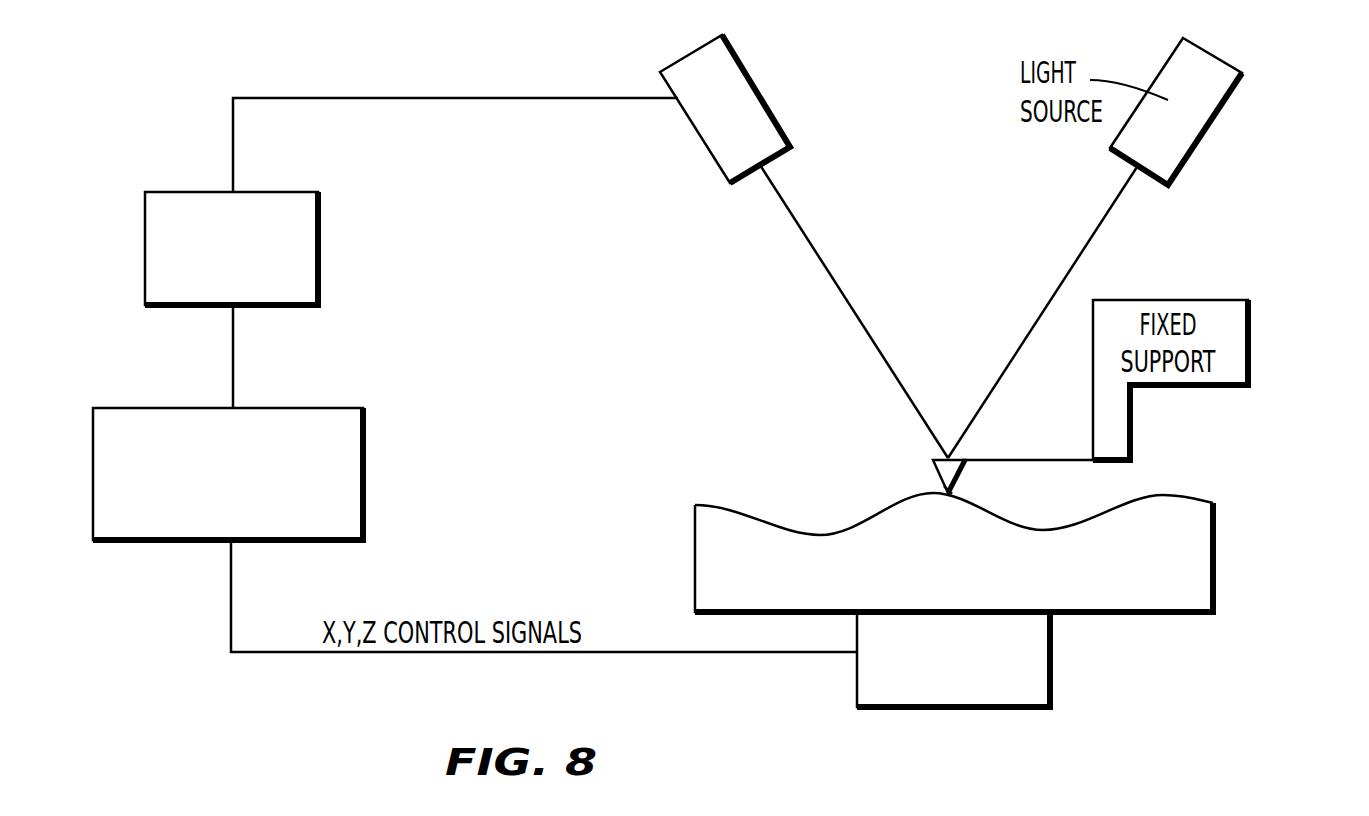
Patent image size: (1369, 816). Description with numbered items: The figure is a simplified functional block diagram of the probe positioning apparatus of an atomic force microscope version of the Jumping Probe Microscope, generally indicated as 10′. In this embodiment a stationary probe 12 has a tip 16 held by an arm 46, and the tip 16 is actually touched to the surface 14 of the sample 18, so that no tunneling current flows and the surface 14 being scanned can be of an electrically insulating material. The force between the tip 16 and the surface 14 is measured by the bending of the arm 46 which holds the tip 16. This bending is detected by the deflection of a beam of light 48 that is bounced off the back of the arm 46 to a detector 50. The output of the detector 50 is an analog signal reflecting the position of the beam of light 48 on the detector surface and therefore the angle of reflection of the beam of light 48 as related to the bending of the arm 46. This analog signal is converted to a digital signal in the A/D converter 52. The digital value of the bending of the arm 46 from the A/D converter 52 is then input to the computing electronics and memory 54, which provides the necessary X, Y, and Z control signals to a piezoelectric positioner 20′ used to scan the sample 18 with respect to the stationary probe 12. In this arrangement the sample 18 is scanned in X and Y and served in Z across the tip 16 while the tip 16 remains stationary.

The atomic force microscope version of the Jumping Probe Microscope 10′ is at (1250, 213).
The probe 12 is at (940, 476).
The surface 14 is at (749, 518).
The tip 16 is at (948, 490).
The sample 18 is at (1176, 575).
The piezoelectric positioner 20′ is at (1045, 677).
The arm 46 is at (1022, 458).
The beam of light 48 is at (847, 303).
The detector 50 is at (717, 72).
The A/D converter 52 is at (318, 236).
The computing electronics and memory 54 is at (363, 440).